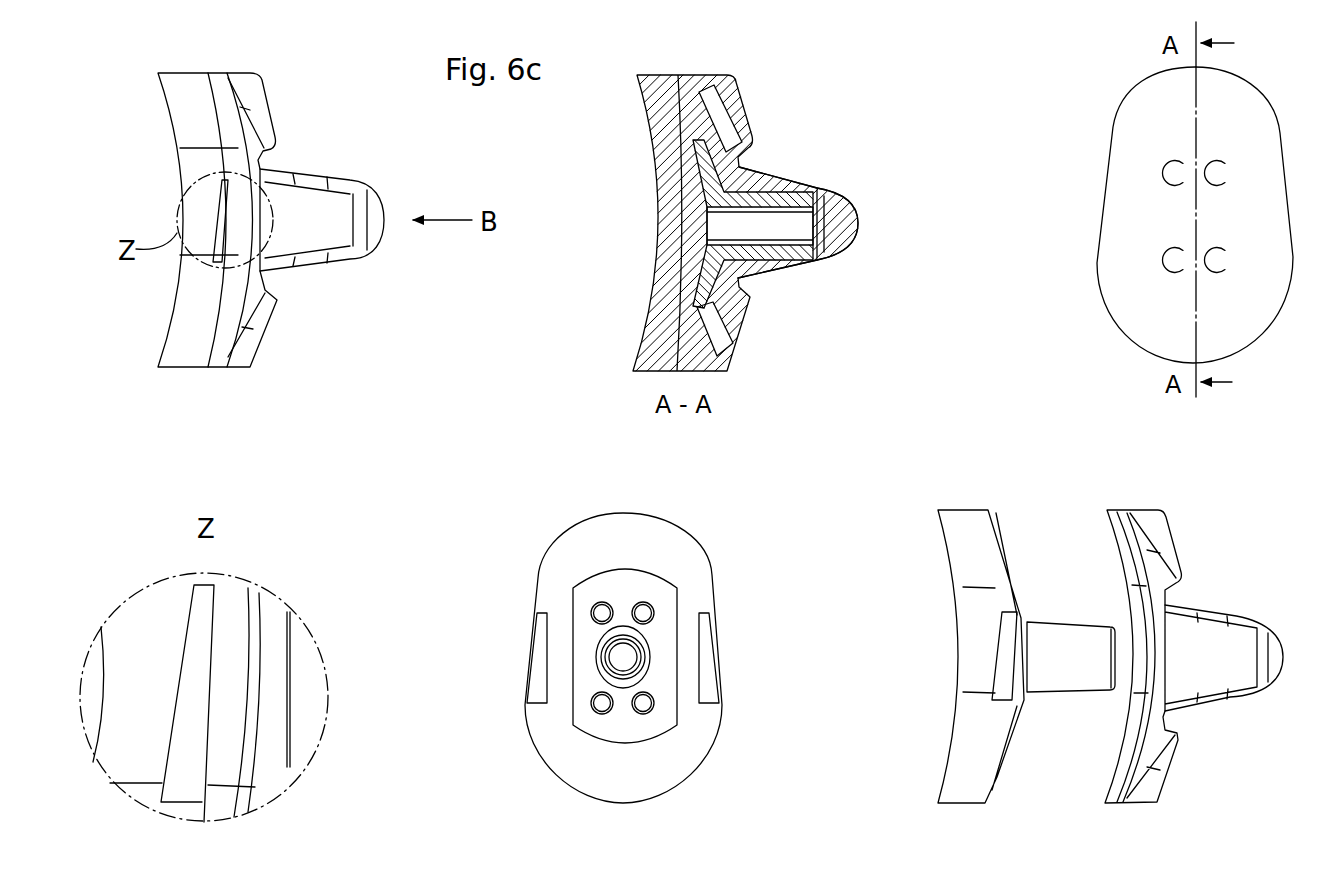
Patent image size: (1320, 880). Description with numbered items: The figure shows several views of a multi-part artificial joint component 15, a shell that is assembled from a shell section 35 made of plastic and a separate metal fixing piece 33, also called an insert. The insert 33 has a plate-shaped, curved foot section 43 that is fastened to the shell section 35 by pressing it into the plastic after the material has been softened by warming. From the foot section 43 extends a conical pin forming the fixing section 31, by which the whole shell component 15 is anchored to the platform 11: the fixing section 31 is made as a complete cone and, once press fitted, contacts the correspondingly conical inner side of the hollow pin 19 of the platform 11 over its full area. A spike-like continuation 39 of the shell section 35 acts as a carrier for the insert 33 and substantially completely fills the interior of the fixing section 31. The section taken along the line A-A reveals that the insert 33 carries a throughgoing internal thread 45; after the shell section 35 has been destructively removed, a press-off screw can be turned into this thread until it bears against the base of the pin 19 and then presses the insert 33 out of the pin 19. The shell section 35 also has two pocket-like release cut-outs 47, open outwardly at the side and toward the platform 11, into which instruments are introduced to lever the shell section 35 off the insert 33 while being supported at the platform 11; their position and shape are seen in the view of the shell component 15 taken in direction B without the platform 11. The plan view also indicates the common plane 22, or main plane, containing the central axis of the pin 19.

The platform 11 is at (287, 318).
The artificial joint component 15 is at (178, 373).
The pin 19 is at (853, 227).
The common plane 22 is at (1198, 397).
The fixing section 31 is at (817, 210).
The fixing piece 33 is at (766, 186).
The shell section 35 is at (672, 310).
The spike-like continuation 39 is at (818, 268).
The foot section 43 is at (687, 183).
The internal thread 45 is at (758, 268).
The release cut-outs 47 is at (224, 212).